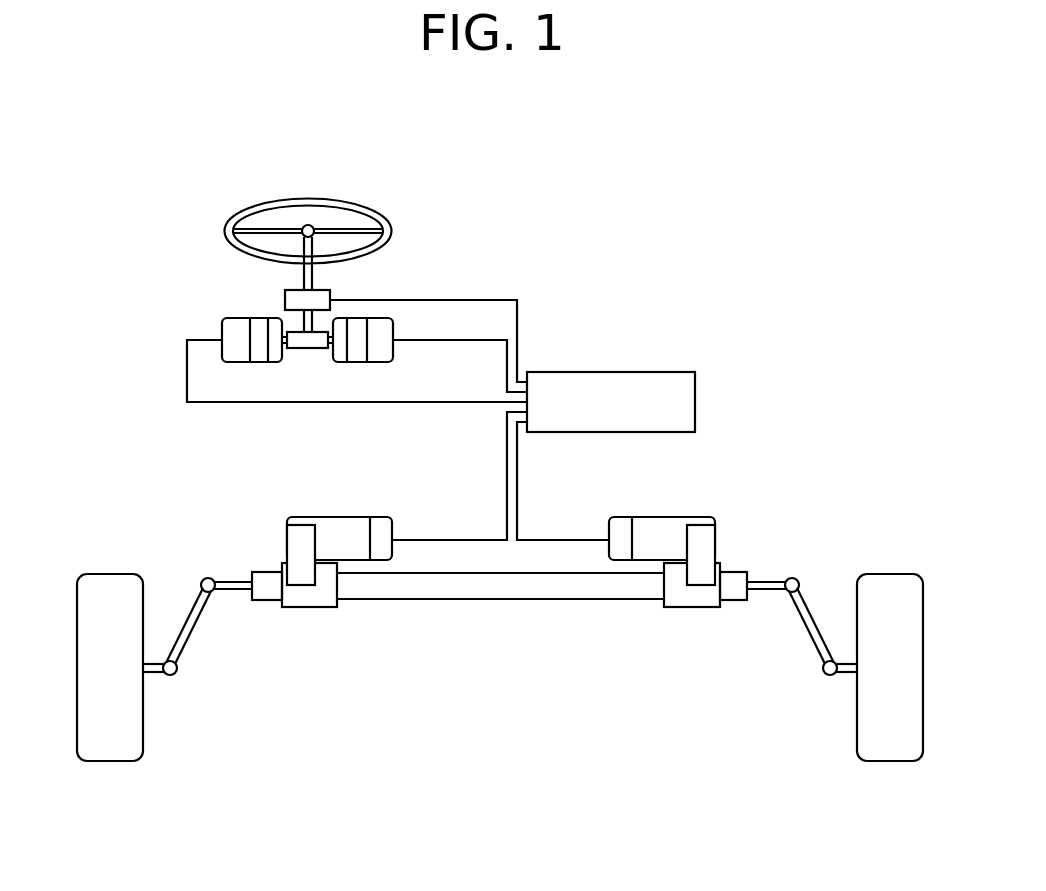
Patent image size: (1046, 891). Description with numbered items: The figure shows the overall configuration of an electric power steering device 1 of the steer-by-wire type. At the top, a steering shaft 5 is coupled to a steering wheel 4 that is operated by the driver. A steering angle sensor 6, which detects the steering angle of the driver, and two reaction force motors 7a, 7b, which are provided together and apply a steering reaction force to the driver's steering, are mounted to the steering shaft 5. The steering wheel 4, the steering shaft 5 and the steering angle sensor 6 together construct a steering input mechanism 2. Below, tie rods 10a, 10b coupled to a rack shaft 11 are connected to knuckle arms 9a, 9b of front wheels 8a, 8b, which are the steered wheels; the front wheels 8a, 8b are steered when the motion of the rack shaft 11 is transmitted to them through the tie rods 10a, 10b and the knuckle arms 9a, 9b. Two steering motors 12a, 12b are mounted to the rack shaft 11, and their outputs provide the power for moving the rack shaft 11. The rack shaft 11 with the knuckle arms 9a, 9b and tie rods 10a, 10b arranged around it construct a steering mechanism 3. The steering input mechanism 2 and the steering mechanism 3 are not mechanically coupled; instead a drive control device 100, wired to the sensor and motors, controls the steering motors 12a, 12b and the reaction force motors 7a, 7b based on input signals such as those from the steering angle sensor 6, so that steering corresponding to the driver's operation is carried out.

The electric power steering device 1 is at (505, 789).
The steering input mechanism 2 is at (428, 267).
The steering mechanism 3 is at (401, 647).
The steering wheel 4 is at (310, 198).
The steering shaft 5 is at (302, 320).
The steering angle sensor 6 is at (285, 297).
The reaction force motor 7a is at (257, 363).
The reaction force motor 7b is at (362, 363).
The front wheel 8a is at (143, 725).
The front wheel 8b is at (857, 725).
The knuckle arm 9a is at (195, 630).
The knuckle arm 9b is at (810, 632).
The tie rod 10a is at (232, 578).
The tie rod 10b is at (768, 578).
The rack shaft 11 is at (513, 600).
The steering motor 12a is at (336, 517).
The steering motor 12b is at (666, 517).
The drive control device 100 is at (695, 390).